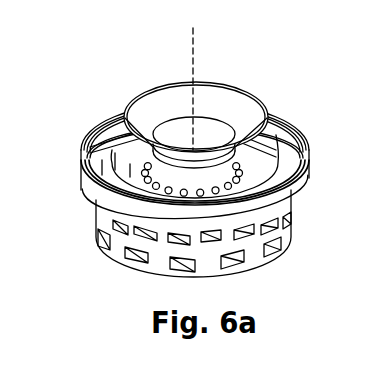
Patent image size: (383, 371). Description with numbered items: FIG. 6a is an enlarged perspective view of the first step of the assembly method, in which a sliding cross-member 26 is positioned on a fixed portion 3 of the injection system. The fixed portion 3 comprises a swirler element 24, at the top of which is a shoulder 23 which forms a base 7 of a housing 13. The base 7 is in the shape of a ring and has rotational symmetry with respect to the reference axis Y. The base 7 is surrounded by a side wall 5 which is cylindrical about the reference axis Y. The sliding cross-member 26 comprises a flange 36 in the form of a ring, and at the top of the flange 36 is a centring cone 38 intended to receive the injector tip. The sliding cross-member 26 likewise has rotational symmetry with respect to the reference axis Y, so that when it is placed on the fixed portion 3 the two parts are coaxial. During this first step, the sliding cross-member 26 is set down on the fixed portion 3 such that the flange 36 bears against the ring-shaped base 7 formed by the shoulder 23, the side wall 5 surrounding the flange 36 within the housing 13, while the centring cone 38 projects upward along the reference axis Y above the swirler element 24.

The fixed portion 3 is at (84, 190).
The side wall 5 is at (306, 185).
The base 7 is at (302, 156).
The housing 13 is at (279, 173).
The shoulder 23 is at (85, 143).
The swirler element 24 is at (100, 222).
The sliding cross-member 26 is at (228, 108).
The flange 36 is at (107, 123).
The centring cone 38 is at (160, 112).
The reference axis Y is at (195, 45).